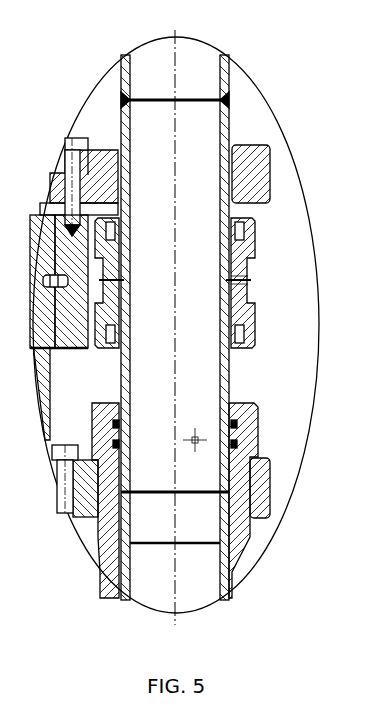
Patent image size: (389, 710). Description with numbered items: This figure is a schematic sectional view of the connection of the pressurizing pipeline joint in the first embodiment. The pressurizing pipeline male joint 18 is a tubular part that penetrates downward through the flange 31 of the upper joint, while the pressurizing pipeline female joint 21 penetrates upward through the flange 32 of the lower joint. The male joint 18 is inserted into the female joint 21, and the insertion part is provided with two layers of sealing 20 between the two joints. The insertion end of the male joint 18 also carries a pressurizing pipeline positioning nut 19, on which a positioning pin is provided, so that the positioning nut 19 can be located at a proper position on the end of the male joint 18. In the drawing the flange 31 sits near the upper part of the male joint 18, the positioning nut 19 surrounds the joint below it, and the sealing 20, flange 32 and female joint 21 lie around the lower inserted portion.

The pressurizing pipeline male joint 18 is at (232, 115).
The flange 31 is at (250, 173).
The pressurizing pipeline positioning nut 19 is at (243, 262).
The sealing 20 is at (237, 430).
The flange 32 is at (262, 478).
The pressurizing pipeline female joint 21 is at (236, 507).